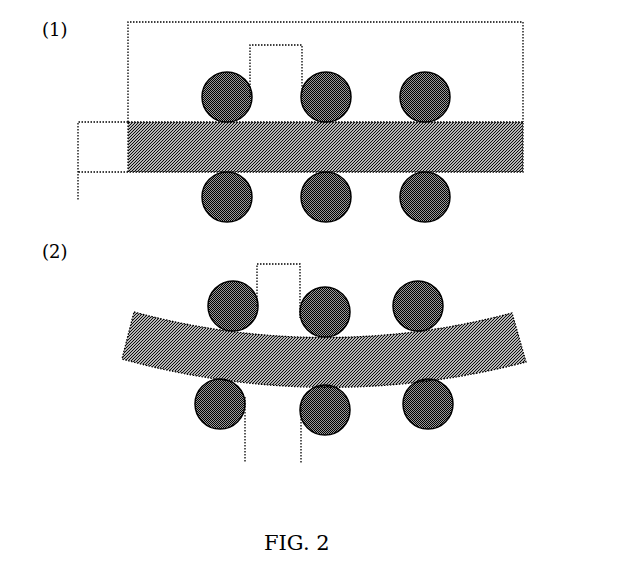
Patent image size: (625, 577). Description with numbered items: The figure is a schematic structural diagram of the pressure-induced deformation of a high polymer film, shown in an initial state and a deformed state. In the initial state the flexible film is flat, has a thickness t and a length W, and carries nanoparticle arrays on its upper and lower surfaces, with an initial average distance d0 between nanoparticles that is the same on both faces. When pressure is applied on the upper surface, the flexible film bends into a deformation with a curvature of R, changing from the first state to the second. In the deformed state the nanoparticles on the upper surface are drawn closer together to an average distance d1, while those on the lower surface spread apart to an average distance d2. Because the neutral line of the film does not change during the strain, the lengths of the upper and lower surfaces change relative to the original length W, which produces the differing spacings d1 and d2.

The width of plate W is at (128, 22).
The thickness of the flexible film t is at (298, 166).
The initial average distance between nanoparticles d0 is at (302, 45).
The curvature of the deformation R is at (148, 312).
The average distance between nanoparticles on the upper surface d1 is at (300, 264).
The average distance between nanoparticles on the lower surface d2 is at (301, 463).